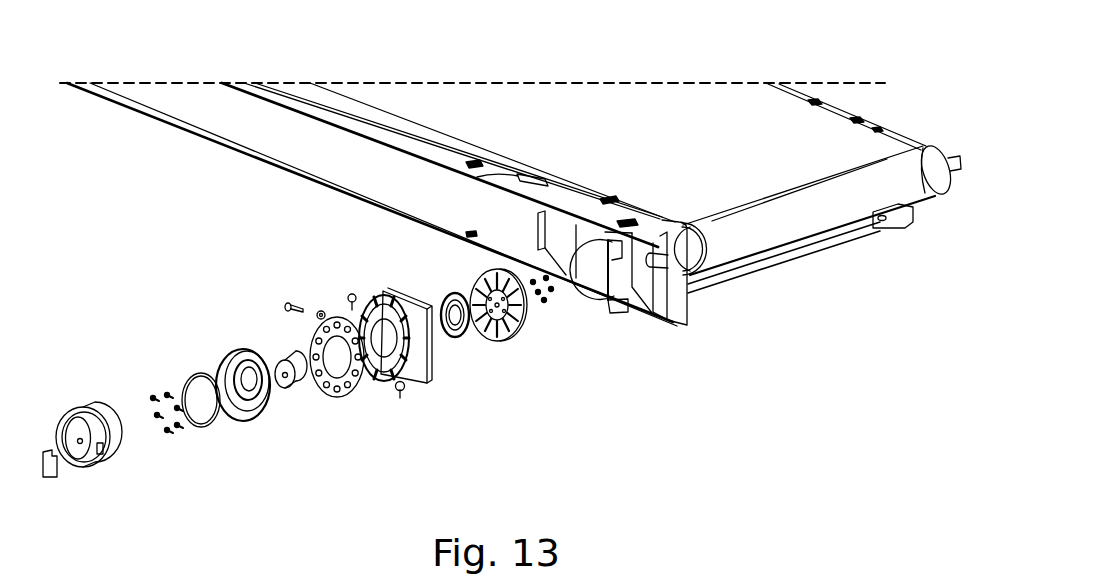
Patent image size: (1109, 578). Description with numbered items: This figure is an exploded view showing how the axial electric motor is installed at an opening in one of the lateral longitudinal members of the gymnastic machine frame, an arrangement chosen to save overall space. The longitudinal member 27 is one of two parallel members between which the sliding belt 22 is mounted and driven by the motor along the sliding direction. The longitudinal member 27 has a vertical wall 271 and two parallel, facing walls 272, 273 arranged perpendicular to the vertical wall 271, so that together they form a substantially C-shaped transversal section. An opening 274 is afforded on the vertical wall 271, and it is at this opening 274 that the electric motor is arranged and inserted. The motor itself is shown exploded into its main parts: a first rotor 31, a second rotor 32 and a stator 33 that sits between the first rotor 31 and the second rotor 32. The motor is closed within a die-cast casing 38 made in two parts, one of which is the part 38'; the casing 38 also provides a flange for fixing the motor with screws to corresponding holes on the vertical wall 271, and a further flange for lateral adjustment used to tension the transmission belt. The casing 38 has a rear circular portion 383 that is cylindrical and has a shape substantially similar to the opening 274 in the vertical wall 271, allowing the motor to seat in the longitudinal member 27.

The sliding belt 22 is at (752, 232).
The lateral longitudinal member 27 is at (225, 158).
The vertical wall 271 is at (477, 177).
The wall 272 is at (293, 99).
The wall 273 is at (197, 137).
The opening 274 is at (616, 274).
The first rotor 31 is at (518, 324).
The second rotor 32 is at (244, 421).
The stator 33 is at (373, 373).
The die-cast casing 38 is at (319, 352).
The casing part 38' is at (94, 458).
The rear circular portion 383 is at (399, 296).